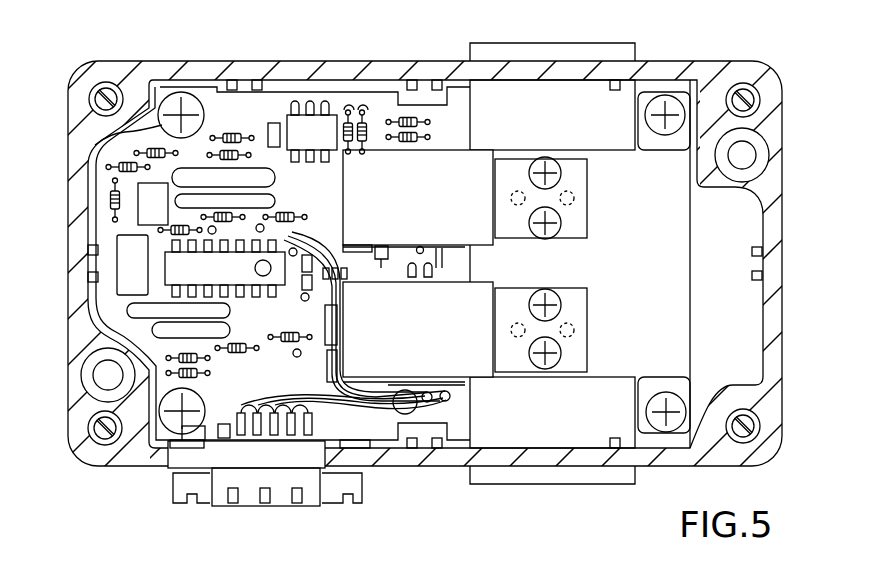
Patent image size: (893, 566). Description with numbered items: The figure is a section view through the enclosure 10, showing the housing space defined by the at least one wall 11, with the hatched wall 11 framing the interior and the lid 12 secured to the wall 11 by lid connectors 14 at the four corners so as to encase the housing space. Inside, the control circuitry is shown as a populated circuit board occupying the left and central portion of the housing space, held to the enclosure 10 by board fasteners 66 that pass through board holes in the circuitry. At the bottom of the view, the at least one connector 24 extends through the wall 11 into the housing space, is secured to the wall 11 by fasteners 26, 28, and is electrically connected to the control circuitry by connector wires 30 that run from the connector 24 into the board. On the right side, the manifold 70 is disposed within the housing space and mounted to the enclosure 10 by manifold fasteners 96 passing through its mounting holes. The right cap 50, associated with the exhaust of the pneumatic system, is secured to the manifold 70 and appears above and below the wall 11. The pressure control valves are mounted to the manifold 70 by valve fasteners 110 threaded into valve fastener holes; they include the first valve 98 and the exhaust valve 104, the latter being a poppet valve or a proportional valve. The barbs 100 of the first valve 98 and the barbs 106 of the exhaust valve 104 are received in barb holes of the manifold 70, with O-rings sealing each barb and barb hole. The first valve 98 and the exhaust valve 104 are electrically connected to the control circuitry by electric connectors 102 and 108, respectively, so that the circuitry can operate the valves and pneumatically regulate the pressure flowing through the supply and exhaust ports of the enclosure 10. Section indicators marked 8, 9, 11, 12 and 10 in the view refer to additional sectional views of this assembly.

The section line 8- 8 is at (50, 258).
The section line 9- 9 is at (50, 429).
The enclosure 10 is at (50, 98).
The wall 11 is at (557, 95).
The lid 12 is at (600, 118).
The lid connectors 14 is at (98, 92).
The connector 24 is at (282, 506).
The fastener 26 is at (182, 503).
The fastener 28 is at (172, 446).
The connector wires 30 is at (308, 390).
The right cap 50 is at (620, 43).
The board fasteners 66 is at (181, 92).
The manifold 70 is at (683, 290).
The manifold fasteners 96 is at (678, 103).
The first valve 98 is at (578, 307).
The barbs 100 is at (577, 332).
The electric connectors 102 is at (302, 322).
The exhaust valve 104 is at (573, 238).
The barbs 106 is at (592, 203).
The electric connectors 108 is at (312, 163).
The valve fasteners 110 is at (556, 238).